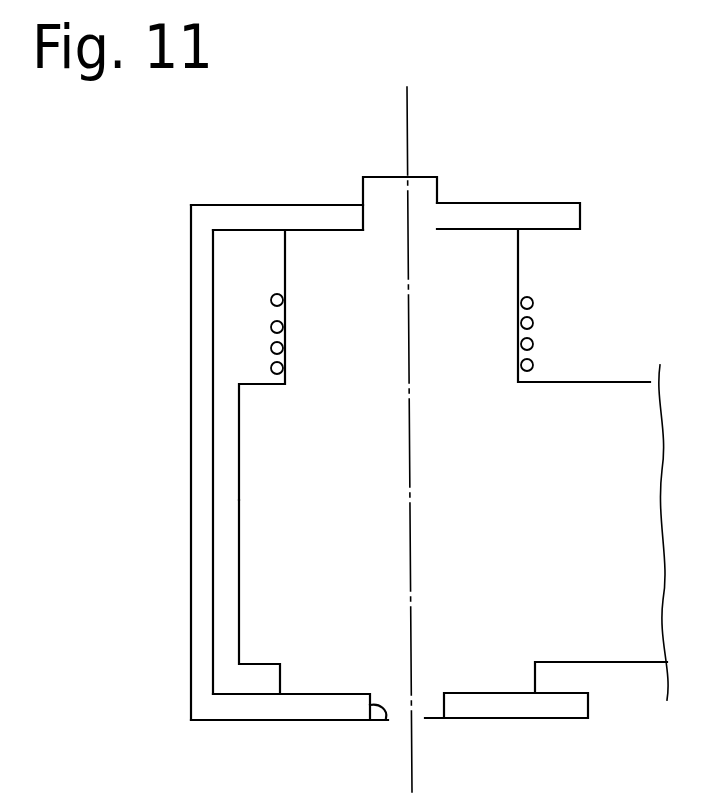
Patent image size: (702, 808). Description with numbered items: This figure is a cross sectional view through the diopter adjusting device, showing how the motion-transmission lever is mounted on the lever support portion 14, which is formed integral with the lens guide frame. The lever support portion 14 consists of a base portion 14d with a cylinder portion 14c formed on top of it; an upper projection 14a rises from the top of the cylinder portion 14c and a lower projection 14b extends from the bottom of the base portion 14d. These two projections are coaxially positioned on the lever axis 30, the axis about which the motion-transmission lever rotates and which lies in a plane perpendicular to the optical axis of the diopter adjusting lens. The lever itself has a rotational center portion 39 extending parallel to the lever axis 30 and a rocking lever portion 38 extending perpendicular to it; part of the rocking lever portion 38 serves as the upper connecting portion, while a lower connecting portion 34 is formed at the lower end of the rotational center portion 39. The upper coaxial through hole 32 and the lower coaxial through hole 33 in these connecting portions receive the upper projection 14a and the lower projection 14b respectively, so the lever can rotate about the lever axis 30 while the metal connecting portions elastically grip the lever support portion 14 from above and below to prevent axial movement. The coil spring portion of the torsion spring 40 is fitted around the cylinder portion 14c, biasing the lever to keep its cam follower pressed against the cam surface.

The lever support portion 14 is at (282, 450).
The upper projection 14a is at (420, 198).
The lower projection 14b is at (428, 703).
The cylinder portion 14c is at (477, 275).
The base portion 14d is at (275, 574).
The lever axis 30 is at (407, 137).
The upper coaxial through hole 32 is at (364, 212).
The lower coaxial through hole 33 is at (385, 718).
The lower connecting portion 34 is at (270, 713).
The rocking lever portion 38 is at (257, 215).
The rotational center portion 39 is at (205, 515).
The torsion spring 40 is at (533, 298).